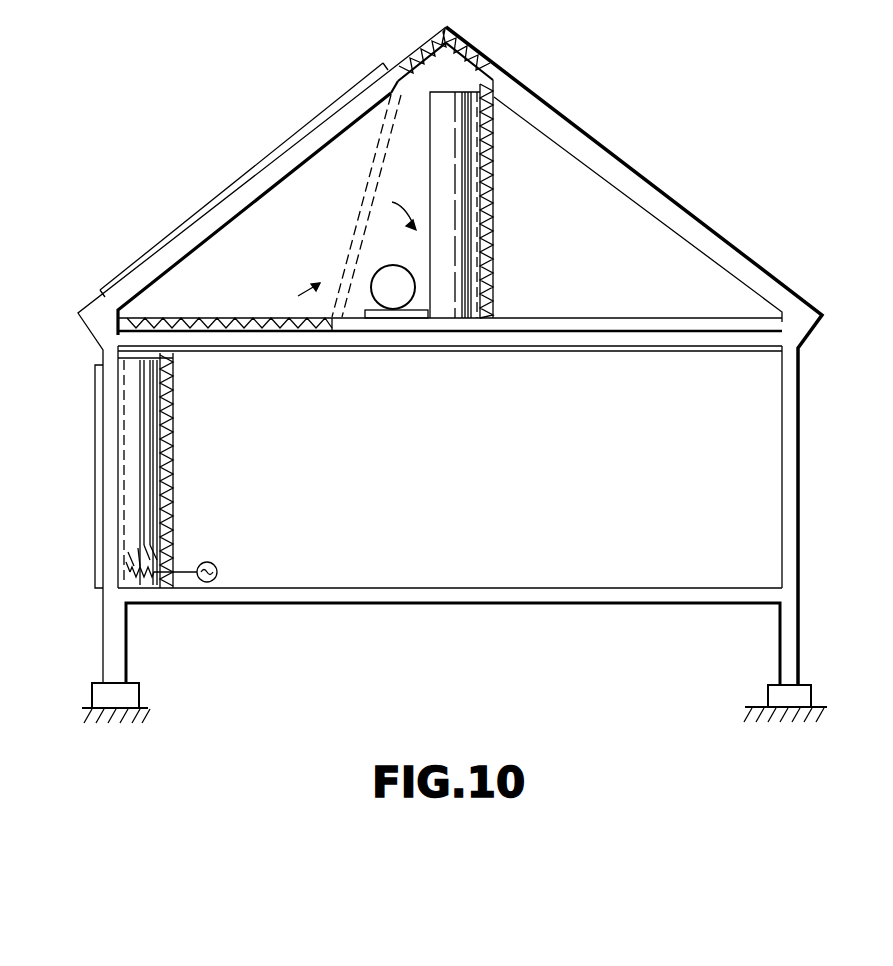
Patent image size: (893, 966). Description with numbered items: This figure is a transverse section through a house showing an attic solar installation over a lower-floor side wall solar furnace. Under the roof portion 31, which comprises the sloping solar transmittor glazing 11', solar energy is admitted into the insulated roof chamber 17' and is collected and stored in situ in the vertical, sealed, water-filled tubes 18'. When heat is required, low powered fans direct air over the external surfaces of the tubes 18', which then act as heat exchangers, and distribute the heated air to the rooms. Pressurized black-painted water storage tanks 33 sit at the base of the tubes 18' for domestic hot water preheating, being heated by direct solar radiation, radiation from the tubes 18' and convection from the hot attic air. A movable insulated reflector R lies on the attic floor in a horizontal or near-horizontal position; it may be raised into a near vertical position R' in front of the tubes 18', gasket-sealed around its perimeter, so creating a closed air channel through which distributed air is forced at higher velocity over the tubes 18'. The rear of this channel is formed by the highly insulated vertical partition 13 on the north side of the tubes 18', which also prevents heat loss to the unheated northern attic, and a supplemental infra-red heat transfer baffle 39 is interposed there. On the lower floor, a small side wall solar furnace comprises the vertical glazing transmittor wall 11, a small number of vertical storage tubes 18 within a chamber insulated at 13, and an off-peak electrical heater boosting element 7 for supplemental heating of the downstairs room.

The roof portion 31 is at (412, 57).
The sloping solar transmittor glazing 11' is at (244, 180).
The near vertical position of reflector R' is at (365, 206).
The movable insulated reflector R is at (270, 287).
The vertical water-filled tubes 18' is at (438, 205).
The insulated roof chamber 17' is at (401, 202).
The water storage tanks 33 is at (388, 276).
The infra-red heat transfer baffle 39 is at (476, 250).
The insulated vertical partition 13 is at (493, 152).
The vertical storage tubes 18 is at (172, 471).
The vertical glazing transmittor wall 11 is at (80, 476).
The off-peak electrical heater boosting element 7 is at (148, 578).